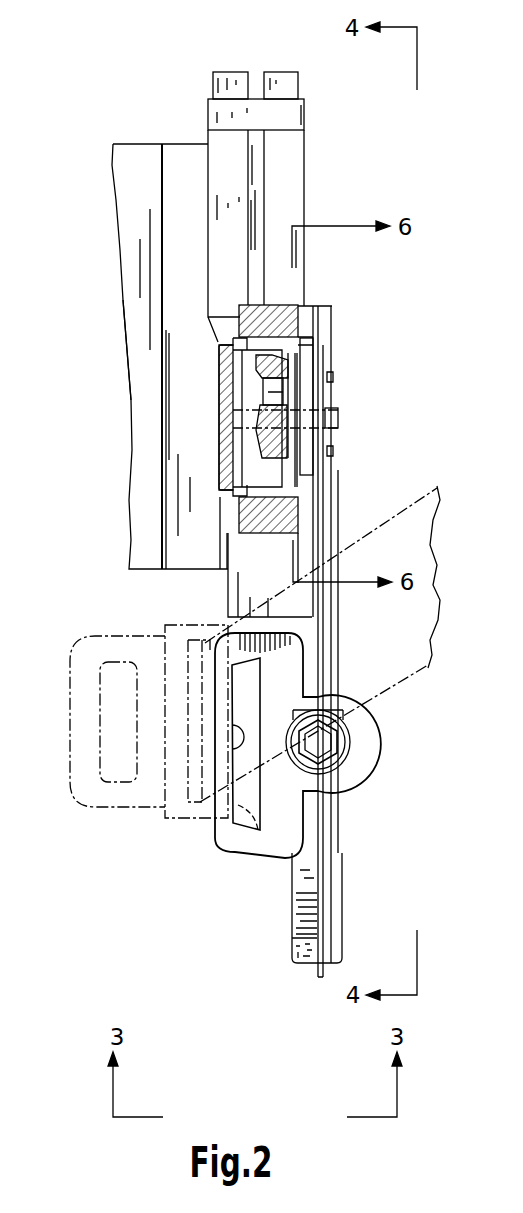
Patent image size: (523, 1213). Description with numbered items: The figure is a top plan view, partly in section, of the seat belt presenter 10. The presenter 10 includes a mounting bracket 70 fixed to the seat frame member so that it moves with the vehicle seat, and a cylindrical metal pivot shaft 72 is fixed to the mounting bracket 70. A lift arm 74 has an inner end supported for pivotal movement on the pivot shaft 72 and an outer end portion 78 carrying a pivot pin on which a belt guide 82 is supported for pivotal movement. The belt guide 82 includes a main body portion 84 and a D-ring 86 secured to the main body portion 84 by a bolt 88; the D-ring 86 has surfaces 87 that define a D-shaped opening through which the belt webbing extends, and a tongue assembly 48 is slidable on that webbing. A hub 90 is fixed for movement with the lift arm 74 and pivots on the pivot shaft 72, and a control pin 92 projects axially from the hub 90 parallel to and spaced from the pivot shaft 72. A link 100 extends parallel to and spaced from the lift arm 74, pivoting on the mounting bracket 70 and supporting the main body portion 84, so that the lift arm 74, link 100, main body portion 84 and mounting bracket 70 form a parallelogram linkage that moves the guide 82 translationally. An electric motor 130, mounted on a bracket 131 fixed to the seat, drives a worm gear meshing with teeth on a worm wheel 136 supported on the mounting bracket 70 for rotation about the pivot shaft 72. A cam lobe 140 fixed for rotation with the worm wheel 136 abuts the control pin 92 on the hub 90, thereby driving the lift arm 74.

The seat belt presenter 10 is at (151, 98).
The electric motor 130 is at (231, 167).
The bracket 131 is at (140, 445).
The worm wheel 136 is at (231, 467).
The mounting bracket 70 is at (277, 318).
The cam lobe 140 is at (313, 310).
The control pin 92 is at (285, 403).
The pivot shaft 72 is at (338, 420).
The hub 90 is at (307, 457).
The lift arm 74 is at (300, 632).
The link 100 is at (333, 617).
The outer end portion 78 is at (320, 687).
The surfaces 87 is at (257, 725).
The tongue assembly 48 is at (70, 672).
The bolt 88 is at (323, 740).
The belt guide 82 is at (352, 903).
The D-ring 86 is at (257, 847).
The main body portion 84 is at (315, 967).